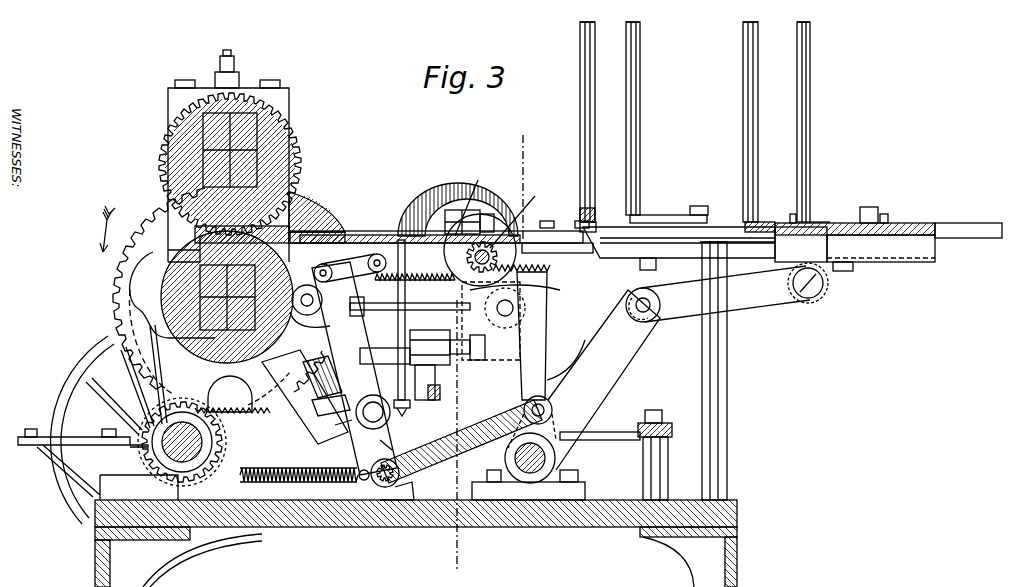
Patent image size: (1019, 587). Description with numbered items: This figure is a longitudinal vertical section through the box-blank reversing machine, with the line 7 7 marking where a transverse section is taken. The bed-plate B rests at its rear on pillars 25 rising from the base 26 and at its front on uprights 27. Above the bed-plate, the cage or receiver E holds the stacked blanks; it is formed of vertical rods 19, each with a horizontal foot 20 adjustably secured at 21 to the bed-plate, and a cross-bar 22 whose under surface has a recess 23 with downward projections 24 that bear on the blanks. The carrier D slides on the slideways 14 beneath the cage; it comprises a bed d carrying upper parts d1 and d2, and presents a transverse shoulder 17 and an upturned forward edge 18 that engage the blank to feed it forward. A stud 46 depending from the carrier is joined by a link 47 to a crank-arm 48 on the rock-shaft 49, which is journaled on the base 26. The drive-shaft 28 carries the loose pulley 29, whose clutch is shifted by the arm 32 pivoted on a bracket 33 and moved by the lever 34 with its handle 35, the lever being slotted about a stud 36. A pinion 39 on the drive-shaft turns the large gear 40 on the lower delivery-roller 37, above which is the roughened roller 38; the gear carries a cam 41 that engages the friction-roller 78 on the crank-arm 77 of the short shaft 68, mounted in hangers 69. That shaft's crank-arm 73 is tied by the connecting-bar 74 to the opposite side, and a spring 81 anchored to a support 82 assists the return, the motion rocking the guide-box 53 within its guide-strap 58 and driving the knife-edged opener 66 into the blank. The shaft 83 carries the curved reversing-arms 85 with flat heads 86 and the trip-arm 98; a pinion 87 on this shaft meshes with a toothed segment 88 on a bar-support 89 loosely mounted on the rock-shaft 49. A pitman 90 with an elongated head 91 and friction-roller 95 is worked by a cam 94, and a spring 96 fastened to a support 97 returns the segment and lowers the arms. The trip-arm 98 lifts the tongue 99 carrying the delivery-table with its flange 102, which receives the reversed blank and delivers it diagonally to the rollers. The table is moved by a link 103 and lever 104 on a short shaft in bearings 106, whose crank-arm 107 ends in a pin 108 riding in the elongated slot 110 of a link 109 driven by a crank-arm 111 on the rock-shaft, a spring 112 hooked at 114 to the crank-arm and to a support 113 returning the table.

The section line 7 7 is at (489, 343).
The slideways 14 is at (737, 236).
The transverse shoulder 17 is at (829, 205).
The upturned transverse edge 18 is at (760, 222).
The vertical bars or rods 19 is at (596, 118).
The horizontal foot 20 is at (668, 202).
The adjustable securing point 21 is at (787, 200).
The cross-bar 22 is at (600, 202).
The recess 23 is at (601, 215).
The projection 24 is at (628, 238).
The pillars 25 is at (728, 392).
The base 26 is at (575, 522).
The uprights 27 is at (298, 397).
The drive-shaft 28 is at (192, 410).
The pulley 29 is at (96, 363).
The shifting arm 32 is at (329, 429).
The bracket 33 is at (58, 466).
The lever 34 is at (240, 402).
The handle 35 is at (643, 405).
The stud 36 is at (668, 478).
The lower roller 37 is at (184, 242).
The upper roller 38 is at (292, 122).
The pinion 39 is at (150, 447).
The large gear 40 is at (206, 291).
The cam 41 is at (312, 210).
The stud 46 is at (801, 265).
The link 47 is at (718, 294).
The crank-arm 48 is at (604, 380).
The shaft 49 is at (556, 456).
The guide-box 53 is at (470, 199).
The guide-strap 58 is at (500, 195).
The left-hand opener 66 is at (469, 220).
The short shaft 68 is at (442, 324).
The hangers 69 is at (447, 268).
The crank-arm 73 is at (442, 370).
The connecting-bar 74 is at (456, 375).
The crank-arm 77 is at (331, 407).
The friction-roller 78 is at (322, 377).
The spring 81 is at (403, 415).
The support 82 is at (410, 313).
The shaft 83 is at (553, 241).
The reversing-arms 85 is at (437, 188).
The flat head 86 is at (410, 222).
The pinion 87 is at (564, 213).
The toothed segment 88 is at (511, 321).
The bar-support 89 is at (546, 380).
The pitman 90 is at (390, 320).
The elongated head 91 is at (214, 297).
The cam 94 is at (307, 293).
The friction-roller 95 is at (308, 327).
The spring 96 is at (415, 288).
The support 97 is at (283, 237).
The trip-arm 98 is at (518, 211).
The tongue 99 is at (356, 231).
The flange 102 is at (372, 404).
The link 103 is at (350, 338).
The lever 104 is at (350, 424).
The bearings 106 is at (361, 449).
The crank-arm 107 is at (354, 368).
The pin 108 is at (401, 491).
The link 109 is at (461, 441).
The elongated slot 110 is at (394, 473).
The crank-arm 111 is at (552, 410).
The spring 112 is at (299, 464).
The support 113 is at (298, 483).
The hook 114 is at (375, 483).
The cage or receiver E is at (695, 53).
The carrier D is at (855, 215).
The bed-plate B is at (968, 217).
The bed d is at (881, 253).
The upper part d1 is at (892, 206).
The upper part d2 is at (812, 196).